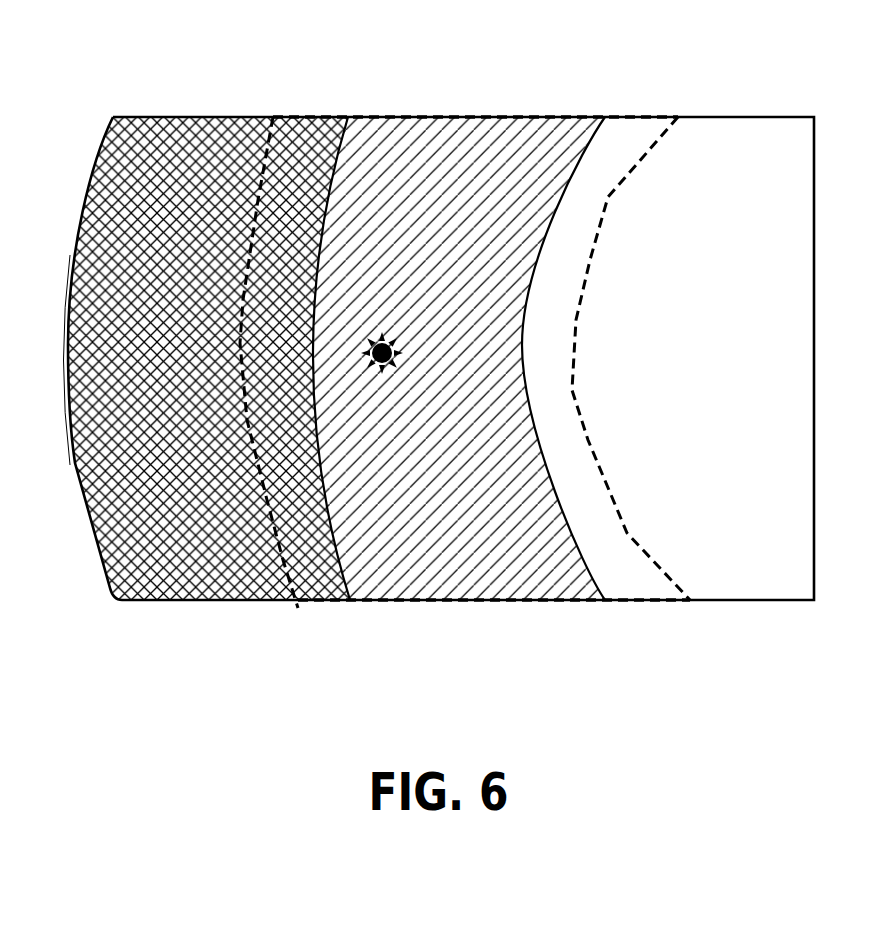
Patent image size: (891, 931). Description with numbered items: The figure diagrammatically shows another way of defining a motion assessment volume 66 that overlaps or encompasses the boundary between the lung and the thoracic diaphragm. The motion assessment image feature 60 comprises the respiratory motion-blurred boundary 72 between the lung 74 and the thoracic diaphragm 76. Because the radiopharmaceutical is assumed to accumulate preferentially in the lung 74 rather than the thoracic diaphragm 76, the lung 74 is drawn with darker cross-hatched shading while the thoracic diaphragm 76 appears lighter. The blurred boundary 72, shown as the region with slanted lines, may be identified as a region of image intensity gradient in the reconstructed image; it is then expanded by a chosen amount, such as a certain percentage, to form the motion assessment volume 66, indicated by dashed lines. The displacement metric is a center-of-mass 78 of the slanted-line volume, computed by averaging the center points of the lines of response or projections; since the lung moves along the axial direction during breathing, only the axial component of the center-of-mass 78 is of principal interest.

The motion assessment image feature 60 is at (147, 96).
The motion assessment volume 66 is at (642, 157).
The boundary 72 is at (357, 607).
The lung 74 is at (203, 363).
The thoracic diaphragm 76 is at (742, 365).
The center-of-mass 78 is at (385, 343).